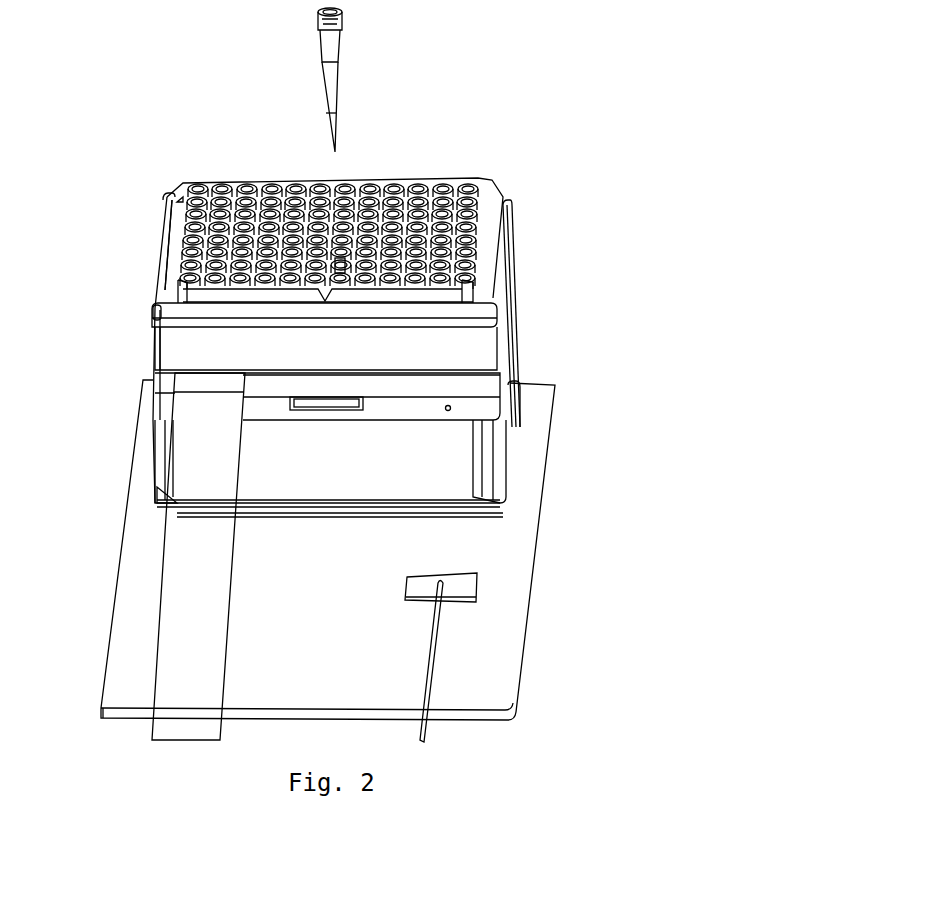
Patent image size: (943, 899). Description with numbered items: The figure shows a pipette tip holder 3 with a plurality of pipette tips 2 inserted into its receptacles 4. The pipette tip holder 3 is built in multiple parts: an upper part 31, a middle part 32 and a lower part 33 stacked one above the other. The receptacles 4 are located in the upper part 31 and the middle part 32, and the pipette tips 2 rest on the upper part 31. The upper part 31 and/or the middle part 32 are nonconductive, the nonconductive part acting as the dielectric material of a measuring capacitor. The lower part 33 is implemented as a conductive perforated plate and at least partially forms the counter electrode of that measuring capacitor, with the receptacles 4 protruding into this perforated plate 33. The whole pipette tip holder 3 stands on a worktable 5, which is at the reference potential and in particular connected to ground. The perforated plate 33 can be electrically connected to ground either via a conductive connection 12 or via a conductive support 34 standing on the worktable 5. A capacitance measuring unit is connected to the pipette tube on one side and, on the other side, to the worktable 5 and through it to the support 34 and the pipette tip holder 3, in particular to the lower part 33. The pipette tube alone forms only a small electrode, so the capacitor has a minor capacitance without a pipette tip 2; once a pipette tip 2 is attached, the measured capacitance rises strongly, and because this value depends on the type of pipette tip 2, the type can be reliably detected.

The pipette tip 2 is at (345, 51).
The pipette tip holder 3 is at (142, 255).
The receptacle 4 is at (480, 223).
The upper part 31 is at (447, 310).
The middle part 32 is at (445, 348).
The lower part 33 is at (452, 383).
The conductive support 34 is at (452, 457).
The conductive connection 12 is at (235, 520).
The worktable 5 is at (478, 670).